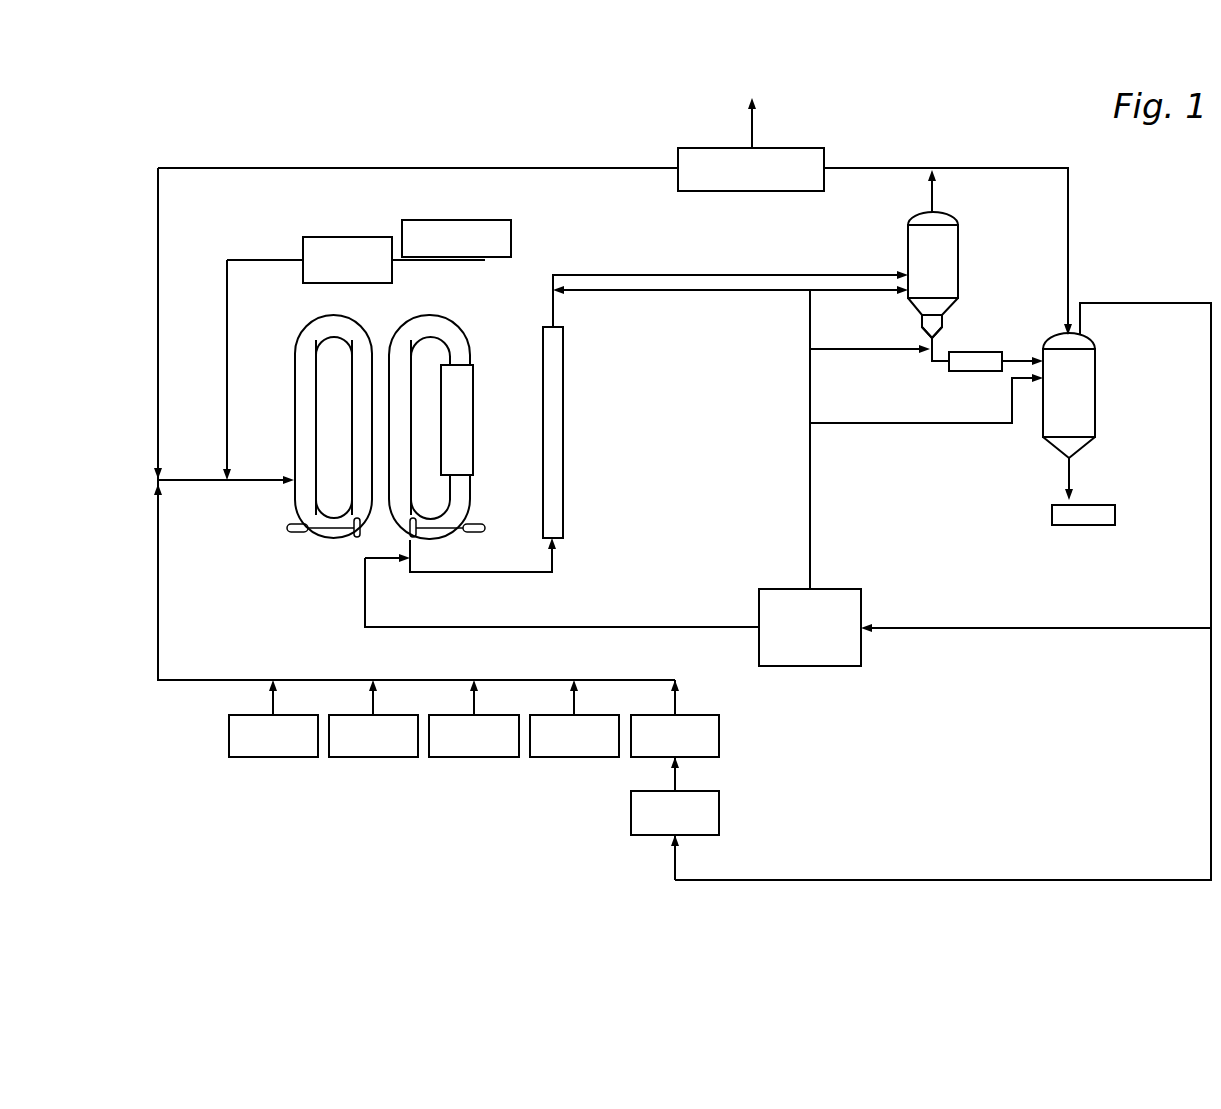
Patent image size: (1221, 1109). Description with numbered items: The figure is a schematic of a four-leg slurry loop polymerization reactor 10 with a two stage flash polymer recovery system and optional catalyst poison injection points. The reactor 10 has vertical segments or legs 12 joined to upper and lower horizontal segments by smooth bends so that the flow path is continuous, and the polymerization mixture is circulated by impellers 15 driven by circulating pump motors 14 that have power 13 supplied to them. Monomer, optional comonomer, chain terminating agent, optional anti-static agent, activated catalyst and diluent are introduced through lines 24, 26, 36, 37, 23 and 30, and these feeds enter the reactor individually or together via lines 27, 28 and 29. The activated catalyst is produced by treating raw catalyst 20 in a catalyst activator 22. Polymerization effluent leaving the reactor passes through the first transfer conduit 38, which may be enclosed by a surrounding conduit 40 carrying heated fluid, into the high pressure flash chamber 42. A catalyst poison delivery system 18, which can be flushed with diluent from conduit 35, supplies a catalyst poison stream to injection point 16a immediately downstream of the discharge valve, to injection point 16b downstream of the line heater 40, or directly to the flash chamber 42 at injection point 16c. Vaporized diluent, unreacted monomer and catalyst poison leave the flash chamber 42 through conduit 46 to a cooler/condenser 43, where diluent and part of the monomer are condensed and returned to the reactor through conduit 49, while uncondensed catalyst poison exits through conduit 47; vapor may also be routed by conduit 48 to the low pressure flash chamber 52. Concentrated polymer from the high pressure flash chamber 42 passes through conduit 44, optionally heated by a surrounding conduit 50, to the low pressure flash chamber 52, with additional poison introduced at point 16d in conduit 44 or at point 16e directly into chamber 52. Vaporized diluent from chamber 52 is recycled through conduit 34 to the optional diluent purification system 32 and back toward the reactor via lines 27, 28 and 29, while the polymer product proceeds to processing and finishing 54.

The slurry loop polymerization reactor 10 is at (473, 316).
The vertical segments or legs 12 is at (347, 358).
The power 13 is at (290, 530).
The circulating pump motor 14 is at (301, 535).
The impeller 15 is at (355, 525).
The injection point 16a is at (398, 560).
The injection point 16b is at (560, 294).
The injection point 16c is at (902, 296).
The injection point 16d is at (922, 352).
The injection point 16e is at (1035, 383).
The catalyst poison delivery system 18 is at (810, 627).
The raw catalyst 20 is at (456, 238).
The catalyst activator 22 is at (347, 260).
The activated catalyst line 23 is at (227, 372).
The monomer line 24 is at (574, 736).
The comonomer line 26 is at (474, 736).
The feed line 27 is at (158, 530).
The feed line 28 is at (212, 478).
The feed line 29 is at (270, 478).
The diluent line 30 is at (675, 736).
The diluent purification system 32 is at (675, 813).
The conduit 34 is at (1135, 302).
The conduit 35 is at (1035, 628).
The chain terminating agent line 36 is at (273, 736).
The anti-static agent line 37 is at (373, 736).
The first transfer conduit 38 is at (500, 572).
The surrounding conduit 40 is at (565, 448).
The high pressure flash chamber 42 is at (933, 275).
The cooler/condenser 43 is at (828, 150).
The conduit 44 is at (940, 342).
The conduit 46 is at (898, 166).
The conduit 47 is at (748, 140).
The conduit 48 is at (987, 166).
The conduit 49 is at (535, 168).
The surrounding conduit 50 is at (984, 372).
The low pressure flash chamber 52 is at (1069, 395).
The processing and finishing 54 is at (1095, 505).